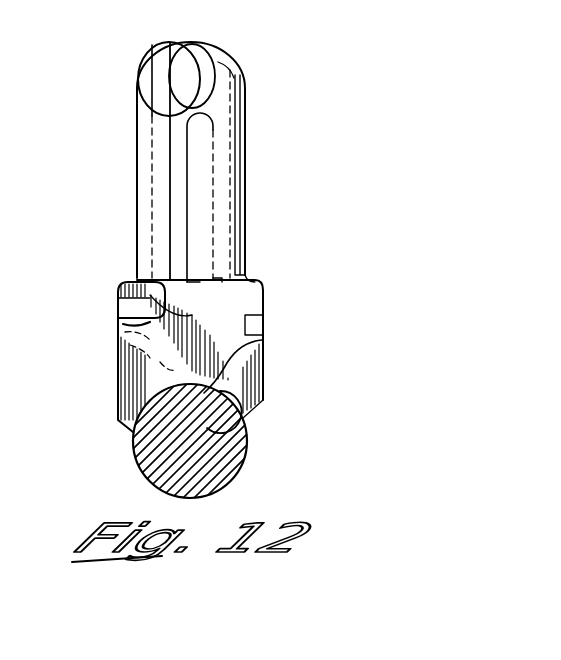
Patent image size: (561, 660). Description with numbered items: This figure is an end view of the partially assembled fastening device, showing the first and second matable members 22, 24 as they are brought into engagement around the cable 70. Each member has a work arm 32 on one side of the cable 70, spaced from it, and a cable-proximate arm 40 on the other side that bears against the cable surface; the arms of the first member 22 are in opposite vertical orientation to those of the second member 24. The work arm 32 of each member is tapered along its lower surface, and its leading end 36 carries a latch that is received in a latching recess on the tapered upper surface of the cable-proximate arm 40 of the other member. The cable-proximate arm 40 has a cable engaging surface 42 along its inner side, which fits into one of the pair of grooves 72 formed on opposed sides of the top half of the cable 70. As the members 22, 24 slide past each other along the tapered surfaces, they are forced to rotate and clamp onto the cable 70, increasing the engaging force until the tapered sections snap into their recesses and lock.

The first matable member 22 is at (257, 164).
The second matable member 24 is at (127, 188).
The work arm 32 is at (272, 276).
The leading end 36 is at (150, 297).
The cable-proximate arm 40 is at (272, 377).
The cable engaging surface 42 is at (247, 440).
The cable 70 is at (257, 473).
The grooves 72 is at (145, 403).